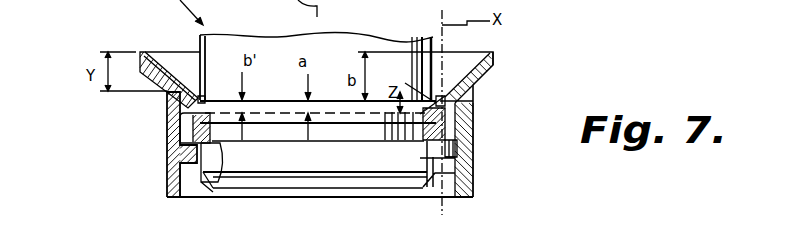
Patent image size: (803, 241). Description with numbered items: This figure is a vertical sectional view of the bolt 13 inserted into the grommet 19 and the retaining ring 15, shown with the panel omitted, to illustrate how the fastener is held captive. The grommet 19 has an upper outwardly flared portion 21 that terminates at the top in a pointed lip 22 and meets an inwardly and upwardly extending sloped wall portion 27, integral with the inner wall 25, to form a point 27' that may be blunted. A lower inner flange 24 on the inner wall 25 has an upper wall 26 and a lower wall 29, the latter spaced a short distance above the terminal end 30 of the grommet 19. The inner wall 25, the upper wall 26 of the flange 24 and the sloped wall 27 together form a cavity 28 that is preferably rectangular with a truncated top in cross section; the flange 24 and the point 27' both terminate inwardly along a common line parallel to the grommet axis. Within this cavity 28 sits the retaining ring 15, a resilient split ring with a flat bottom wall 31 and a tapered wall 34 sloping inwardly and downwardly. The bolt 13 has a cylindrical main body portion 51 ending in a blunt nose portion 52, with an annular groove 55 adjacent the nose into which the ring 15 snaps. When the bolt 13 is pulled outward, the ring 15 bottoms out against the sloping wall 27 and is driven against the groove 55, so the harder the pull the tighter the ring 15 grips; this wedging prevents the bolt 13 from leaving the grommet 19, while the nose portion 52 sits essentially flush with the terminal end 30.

The bolt 13 is at (602, 2).
The retaining ring 15 is at (422, 140).
The grommet 19 is at (473, 137).
The upper outwardly flared portion 21 is at (480, 80).
The pointed lip 22 is at (490, 60).
The lower inner flange 24 is at (455, 160).
The inner wall 25 is at (457, 152).
The upper wall of flange 26 is at (197, 140).
The sloped wall portion 27 is at (495, 150).
The point 27' is at (321, 58).
The cavity 28 is at (180, 120).
The lower wall of flange 29 is at (180, 183).
The terminal end of grommet 30 is at (467, 197).
The flat bottom wall 31 is at (420, 186).
The tapered wall 34 is at (212, 114).
The main body portion 51 is at (200, 46).
The nose portion 52 is at (337, 180).
The annular groove 55 is at (210, 115).